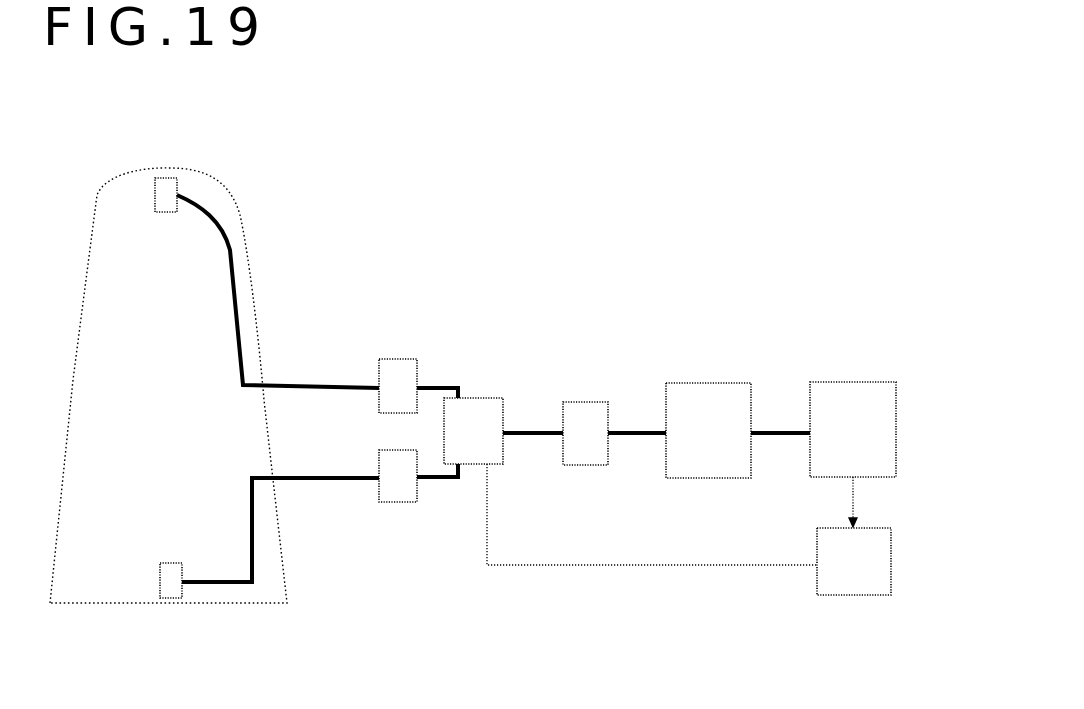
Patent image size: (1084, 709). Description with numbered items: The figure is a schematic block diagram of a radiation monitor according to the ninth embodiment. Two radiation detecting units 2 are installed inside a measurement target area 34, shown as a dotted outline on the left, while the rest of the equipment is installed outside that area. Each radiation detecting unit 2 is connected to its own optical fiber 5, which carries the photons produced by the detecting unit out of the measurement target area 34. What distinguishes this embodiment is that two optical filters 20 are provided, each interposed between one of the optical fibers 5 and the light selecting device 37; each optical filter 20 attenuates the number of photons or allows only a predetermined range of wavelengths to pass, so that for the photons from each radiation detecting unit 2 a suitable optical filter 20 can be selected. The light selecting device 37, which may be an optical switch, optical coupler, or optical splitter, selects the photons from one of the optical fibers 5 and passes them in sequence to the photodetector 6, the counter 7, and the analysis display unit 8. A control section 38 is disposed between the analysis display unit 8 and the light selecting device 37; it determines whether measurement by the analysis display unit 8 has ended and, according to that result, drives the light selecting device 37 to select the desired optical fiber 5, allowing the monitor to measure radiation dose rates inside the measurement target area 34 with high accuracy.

The measurement target area 34 is at (127, 205).
The radiation detecting unit 2 is at (167, 195).
The optical fiber 5 is at (305, 387).
The optical filter 20 is at (397, 377).
The light selecting device 37 is at (475, 425).
The photodetector 6 is at (582, 430).
The counter 7 is at (698, 407).
The analysis display unit 8 is at (848, 405).
The control section 38 is at (882, 565).